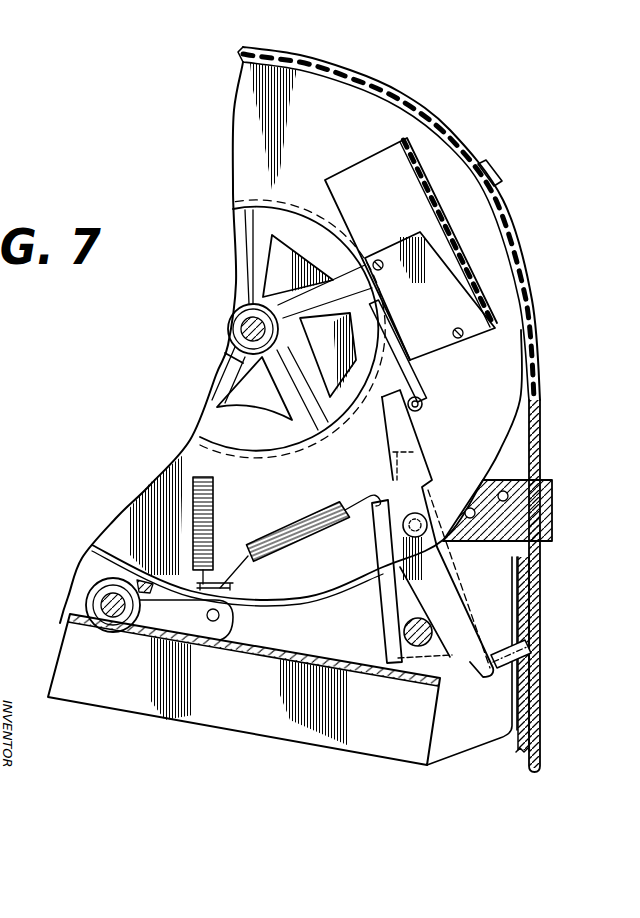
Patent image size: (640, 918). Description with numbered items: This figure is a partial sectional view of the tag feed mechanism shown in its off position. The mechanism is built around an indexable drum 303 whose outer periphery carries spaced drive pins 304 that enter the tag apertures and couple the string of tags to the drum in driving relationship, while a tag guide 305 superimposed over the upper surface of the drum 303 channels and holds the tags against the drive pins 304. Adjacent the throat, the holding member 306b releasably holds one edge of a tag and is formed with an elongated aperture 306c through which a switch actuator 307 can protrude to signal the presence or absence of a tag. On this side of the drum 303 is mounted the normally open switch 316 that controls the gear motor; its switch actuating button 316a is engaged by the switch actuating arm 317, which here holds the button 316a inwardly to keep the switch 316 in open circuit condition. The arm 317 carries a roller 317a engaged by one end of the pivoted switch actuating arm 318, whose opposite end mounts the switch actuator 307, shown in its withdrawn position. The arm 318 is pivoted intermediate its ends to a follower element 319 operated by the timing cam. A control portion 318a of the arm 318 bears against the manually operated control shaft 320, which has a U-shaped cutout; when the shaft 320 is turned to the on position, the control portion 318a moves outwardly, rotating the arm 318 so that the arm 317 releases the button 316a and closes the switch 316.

The indexable drum 303 is at (370, 112).
The drive pins 304 is at (497, 178).
The tag guide 305 is at (540, 428).
The elongated aperture 306c is at (528, 617).
The holding member 306b is at (516, 752).
The switch actuator 307 is at (529, 650).
The switch 316 is at (355, 182).
The switch actuating button 316a is at (405, 352).
The switch actuating arm 317 is at (426, 380).
The roller 317a is at (424, 415).
The switch actuating arm 318 is at (432, 470).
The control portion 318a is at (397, 609).
The follower element 319 is at (387, 528).
The control shaft 320 is at (397, 668).